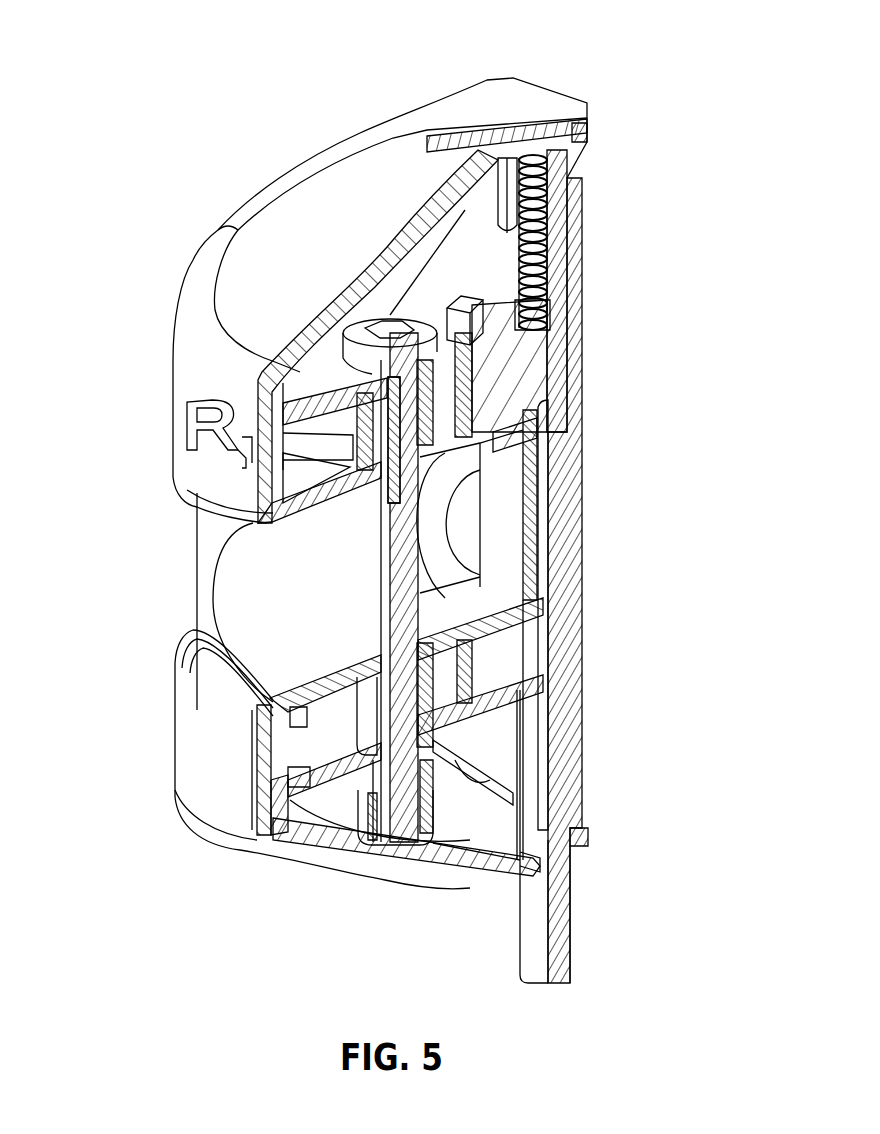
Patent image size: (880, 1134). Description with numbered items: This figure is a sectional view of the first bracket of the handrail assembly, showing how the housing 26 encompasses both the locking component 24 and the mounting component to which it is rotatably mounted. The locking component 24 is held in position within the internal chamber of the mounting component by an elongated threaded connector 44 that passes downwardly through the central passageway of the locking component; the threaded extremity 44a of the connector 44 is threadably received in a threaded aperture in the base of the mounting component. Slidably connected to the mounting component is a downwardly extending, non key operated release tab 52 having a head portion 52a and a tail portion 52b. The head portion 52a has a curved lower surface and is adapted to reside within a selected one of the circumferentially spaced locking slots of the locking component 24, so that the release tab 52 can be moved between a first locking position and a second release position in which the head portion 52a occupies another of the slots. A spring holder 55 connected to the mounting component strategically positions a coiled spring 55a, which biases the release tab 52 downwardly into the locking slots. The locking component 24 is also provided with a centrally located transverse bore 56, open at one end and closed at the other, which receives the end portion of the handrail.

The housing 26 is at (445, 97).
The spring holder 55 is at (573, 160).
The coiled spring 55a is at (547, 243).
The head portion 52a is at (543, 363).
The release tab 52 is at (560, 477).
The tail portion 52b is at (575, 938).
The threaded connector 44 is at (403, 560).
The threaded extremity 44a is at (356, 808).
The locking component 24 is at (207, 537).
The transverse bore 56 is at (270, 611).